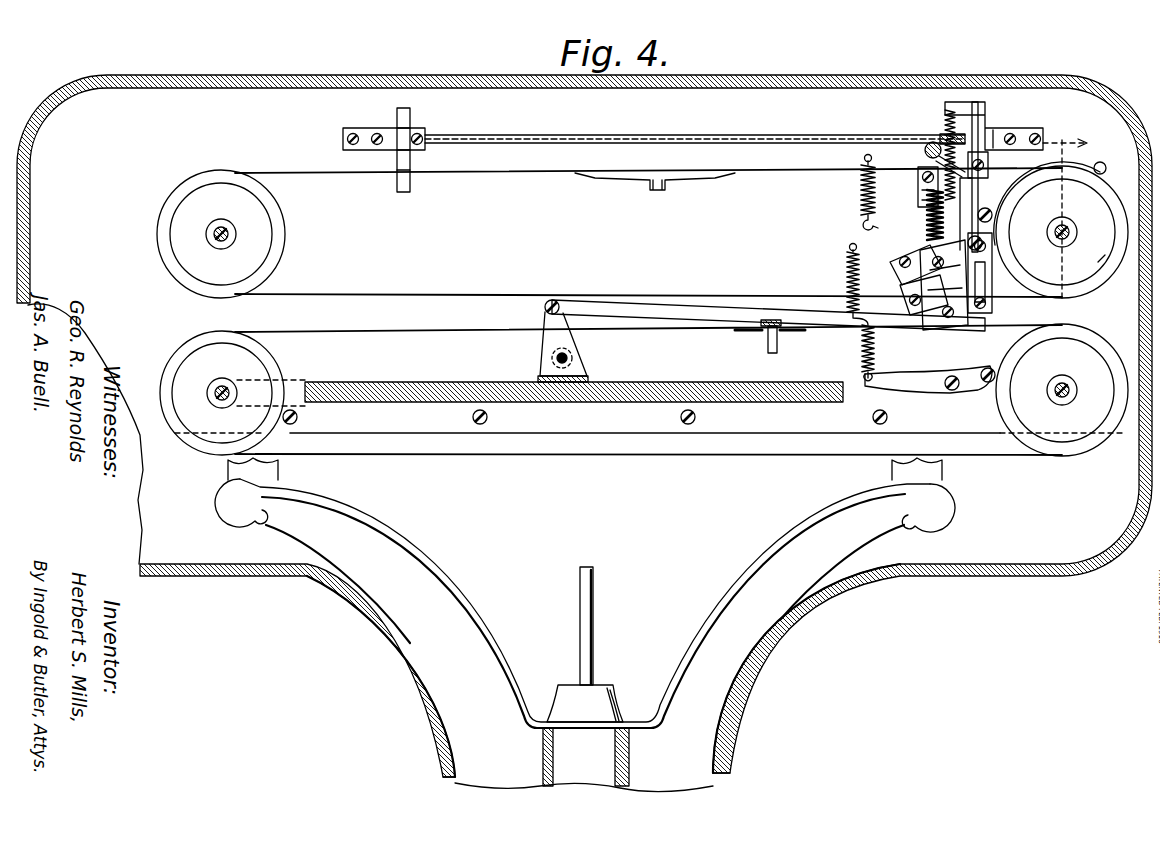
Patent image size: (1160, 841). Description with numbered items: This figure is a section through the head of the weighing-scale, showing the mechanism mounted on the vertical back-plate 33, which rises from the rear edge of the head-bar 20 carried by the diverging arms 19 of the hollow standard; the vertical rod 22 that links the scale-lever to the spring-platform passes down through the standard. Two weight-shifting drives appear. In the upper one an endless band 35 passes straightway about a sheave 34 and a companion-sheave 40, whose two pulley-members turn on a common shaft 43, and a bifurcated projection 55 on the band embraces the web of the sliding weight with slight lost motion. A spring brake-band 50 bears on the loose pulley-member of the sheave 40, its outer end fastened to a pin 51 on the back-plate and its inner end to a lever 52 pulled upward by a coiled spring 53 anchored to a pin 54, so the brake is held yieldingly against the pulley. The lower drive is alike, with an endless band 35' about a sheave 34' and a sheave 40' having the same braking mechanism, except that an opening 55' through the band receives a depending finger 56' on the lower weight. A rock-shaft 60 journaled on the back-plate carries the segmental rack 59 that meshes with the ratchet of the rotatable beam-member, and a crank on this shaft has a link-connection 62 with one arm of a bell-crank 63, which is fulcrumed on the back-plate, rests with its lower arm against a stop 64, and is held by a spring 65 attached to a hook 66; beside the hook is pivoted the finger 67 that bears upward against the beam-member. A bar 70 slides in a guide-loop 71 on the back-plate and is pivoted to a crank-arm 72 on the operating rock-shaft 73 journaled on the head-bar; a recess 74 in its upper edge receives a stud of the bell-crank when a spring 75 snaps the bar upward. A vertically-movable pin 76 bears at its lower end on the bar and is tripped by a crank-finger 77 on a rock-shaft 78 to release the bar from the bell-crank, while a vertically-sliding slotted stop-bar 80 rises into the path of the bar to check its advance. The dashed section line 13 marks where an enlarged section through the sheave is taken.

The back-plate 33 is at (584, 433).
The diverging arms 19 is at (740, 585).
The vertical rod 22 is at (595, 617).
The sheave 34 is at (189, 234).
The sheave 34' is at (216, 393).
The endless band 35 is at (648, 232).
The endless band 35' is at (680, 377).
The pin 51 is at (1097, 175).
The shaft 43 is at (1065, 238).
The companion-sheave 40 is at (1106, 278).
The sheave 40' is at (1062, 400).
The head-bar 20 is at (430, 402).
The rock-shaft 60 is at (568, 135).
The segmental rack 59 is at (410, 122).
The bifurcated projection 55 is at (655, 200).
The opening 55' is at (759, 349).
The depending finger 56' is at (795, 346).
The bar 70 is at (650, 302).
The crank-arm 72 is at (543, 338).
The operating rock-shaft 73 is at (575, 357).
The coiled spring 53 is at (860, 195).
The pin 54 is at (862, 157).
The lever 52 is at (866, 223).
The spring 75 is at (847, 272).
The recess 74 is at (871, 333).
The spring 65 is at (930, 222).
The rock-shaft 78 is at (933, 142).
The hook 66 is at (925, 190).
The vertically-movable pin 76 is at (982, 190).
The link-connection 62 is at (983, 127).
The section line 13 is at (1065, 132).
The crank-finger 77 is at (988, 162).
The finger 67 is at (1000, 242).
The spring brake-band 50 is at (1096, 163).
The bell-crank 63 is at (895, 258).
The stop 64 is at (924, 292).
The stop-bar 80 is at (995, 300).
The guide-loop 71 is at (935, 342).